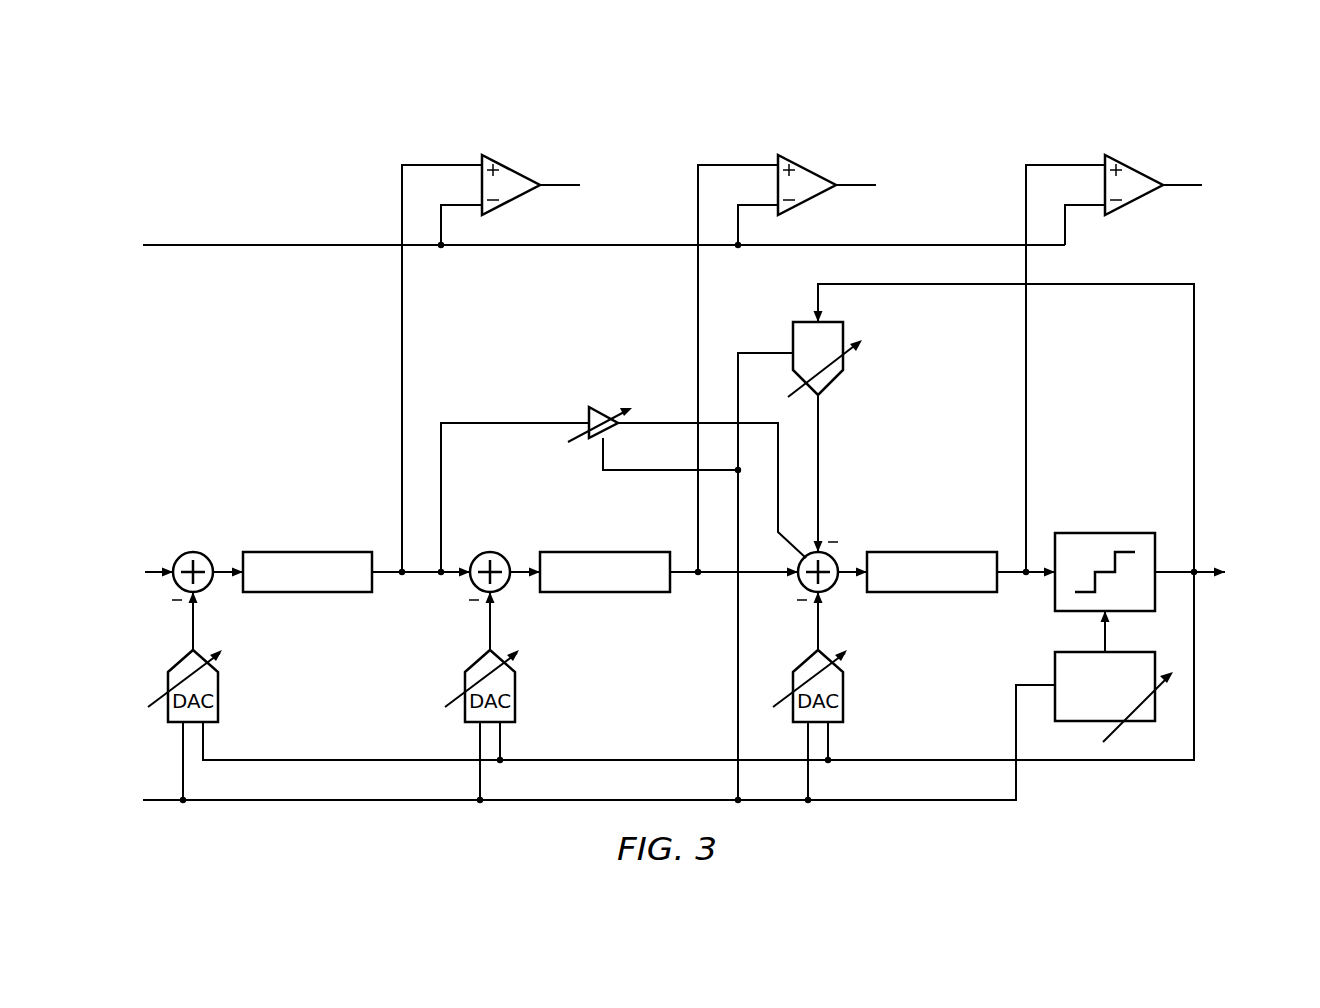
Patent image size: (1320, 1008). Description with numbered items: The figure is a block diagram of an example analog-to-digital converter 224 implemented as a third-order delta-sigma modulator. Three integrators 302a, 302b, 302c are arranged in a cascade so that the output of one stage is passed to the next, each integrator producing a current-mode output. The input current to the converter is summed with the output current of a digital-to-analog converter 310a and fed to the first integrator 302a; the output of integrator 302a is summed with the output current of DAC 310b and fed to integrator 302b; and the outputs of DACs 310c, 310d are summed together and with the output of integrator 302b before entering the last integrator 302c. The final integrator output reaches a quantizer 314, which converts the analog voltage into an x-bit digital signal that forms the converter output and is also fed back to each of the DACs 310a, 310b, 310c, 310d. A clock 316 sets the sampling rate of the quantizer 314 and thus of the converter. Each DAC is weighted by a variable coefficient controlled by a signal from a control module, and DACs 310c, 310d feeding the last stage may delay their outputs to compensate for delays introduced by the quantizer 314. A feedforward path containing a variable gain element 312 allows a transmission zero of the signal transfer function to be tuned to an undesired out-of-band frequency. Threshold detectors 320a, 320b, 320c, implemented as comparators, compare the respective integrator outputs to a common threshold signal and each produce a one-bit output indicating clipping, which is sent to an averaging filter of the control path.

The analog-to-digital converter 224 is at (344, 112).
The integrator 302a is at (307, 551).
The integrator 302b is at (604, 551).
The integrator 302c is at (931, 551).
The digital-to-analog converter 310a is at (218, 697).
The digital-to-analog converter 310b is at (516, 697).
The digital-to-analog converter 310c is at (843, 697).
The digital-to-analog converter 310d is at (793, 338).
The gain element 312 is at (605, 407).
The quantizer 314 is at (1106, 532).
The clock 316 is at (1055, 670).
The threshold detector 320a is at (532, 151).
The threshold detector 320b is at (828, 151).
The threshold detector 320c is at (1158, 151).